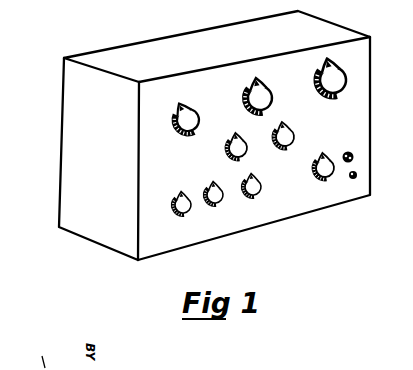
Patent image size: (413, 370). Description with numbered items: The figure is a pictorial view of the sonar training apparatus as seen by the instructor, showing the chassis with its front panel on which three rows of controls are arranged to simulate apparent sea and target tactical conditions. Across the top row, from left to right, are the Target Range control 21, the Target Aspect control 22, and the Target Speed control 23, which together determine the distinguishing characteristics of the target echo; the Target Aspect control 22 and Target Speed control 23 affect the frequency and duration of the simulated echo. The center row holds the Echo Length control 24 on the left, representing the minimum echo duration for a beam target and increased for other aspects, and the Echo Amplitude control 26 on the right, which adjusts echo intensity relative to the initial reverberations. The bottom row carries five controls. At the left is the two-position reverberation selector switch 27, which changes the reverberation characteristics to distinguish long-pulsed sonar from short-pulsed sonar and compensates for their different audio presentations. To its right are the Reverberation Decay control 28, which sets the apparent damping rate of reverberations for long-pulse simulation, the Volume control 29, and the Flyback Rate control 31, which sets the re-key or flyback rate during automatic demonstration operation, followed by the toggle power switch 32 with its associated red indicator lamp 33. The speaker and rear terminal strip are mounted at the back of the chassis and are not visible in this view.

The Target Range control 21 is at (193, 110).
The Target Aspect control 22 is at (269, 101).
The Target Speed control 23 is at (339, 87).
The Echo Length control 24 is at (230, 153).
The Echo Amplitude control 26 is at (291, 131).
The reverberation selector switch 27 is at (187, 212).
The Reverberation Decay control 28 is at (218, 203).
The Volume control 29 is at (257, 195).
The Flyback Rate control 31 is at (331, 177).
The toggle power switch 32 is at (356, 178).
The red indicator lamp 33 is at (354, 152).